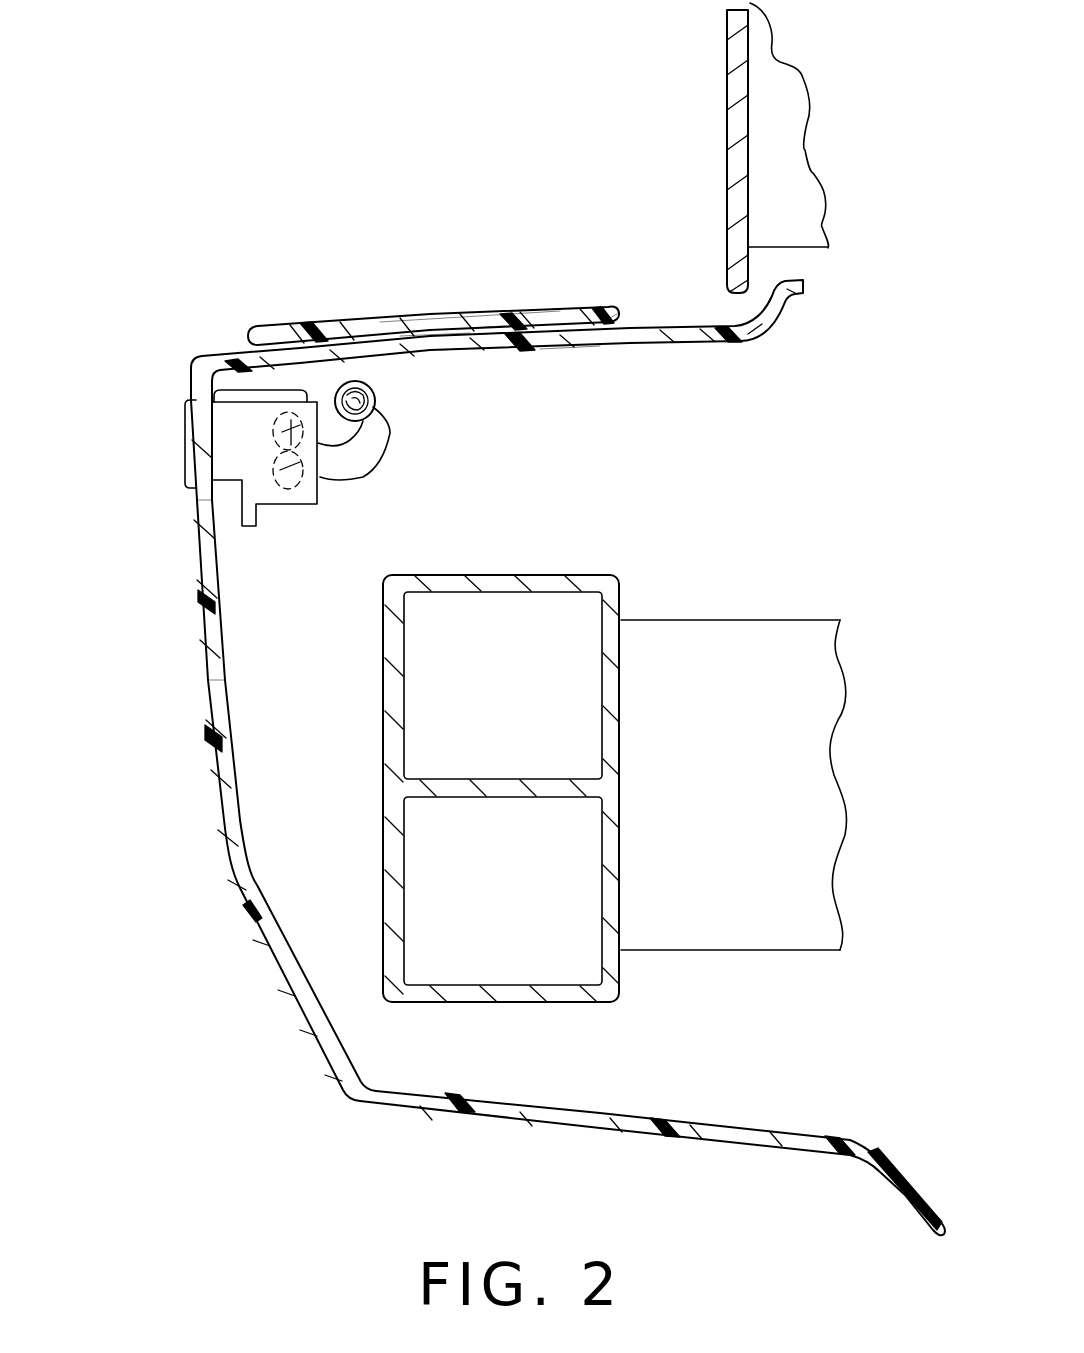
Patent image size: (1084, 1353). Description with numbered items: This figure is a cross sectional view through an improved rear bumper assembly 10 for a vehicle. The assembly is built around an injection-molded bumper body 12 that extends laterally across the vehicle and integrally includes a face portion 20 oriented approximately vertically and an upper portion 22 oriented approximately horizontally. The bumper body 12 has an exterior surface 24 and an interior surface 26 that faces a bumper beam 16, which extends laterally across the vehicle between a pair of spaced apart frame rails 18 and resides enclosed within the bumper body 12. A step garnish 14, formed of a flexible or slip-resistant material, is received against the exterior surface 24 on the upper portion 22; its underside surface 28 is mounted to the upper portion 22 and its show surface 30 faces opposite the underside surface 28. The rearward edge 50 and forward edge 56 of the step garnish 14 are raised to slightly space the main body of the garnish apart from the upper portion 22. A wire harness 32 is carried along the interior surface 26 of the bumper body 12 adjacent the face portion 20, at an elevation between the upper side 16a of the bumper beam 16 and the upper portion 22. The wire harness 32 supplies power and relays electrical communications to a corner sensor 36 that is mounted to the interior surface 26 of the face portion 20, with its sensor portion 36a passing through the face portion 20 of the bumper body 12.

The rear bumper assembly 10 is at (162, 921).
The bumper body 12 is at (215, 818).
The step garnish 14 is at (497, 311).
The bumper beam 16 is at (450, 810).
The upper side of the bumper beam 16a is at (530, 576).
The frame rail 18 is at (755, 635).
The face portion 20 is at (207, 683).
The upper portion 22 is at (560, 340).
The exterior surface 24 is at (432, 343).
The interior surface 26 is at (457, 353).
The underside surface 28 is at (500, 340).
The show surface 30 is at (408, 308).
The wire harness 32 is at (393, 427).
The corner sensor 36 is at (243, 423).
The sensor portion 36a is at (188, 453).
The rearward edge 50 is at (263, 325).
The forward edge 56 is at (619, 325).